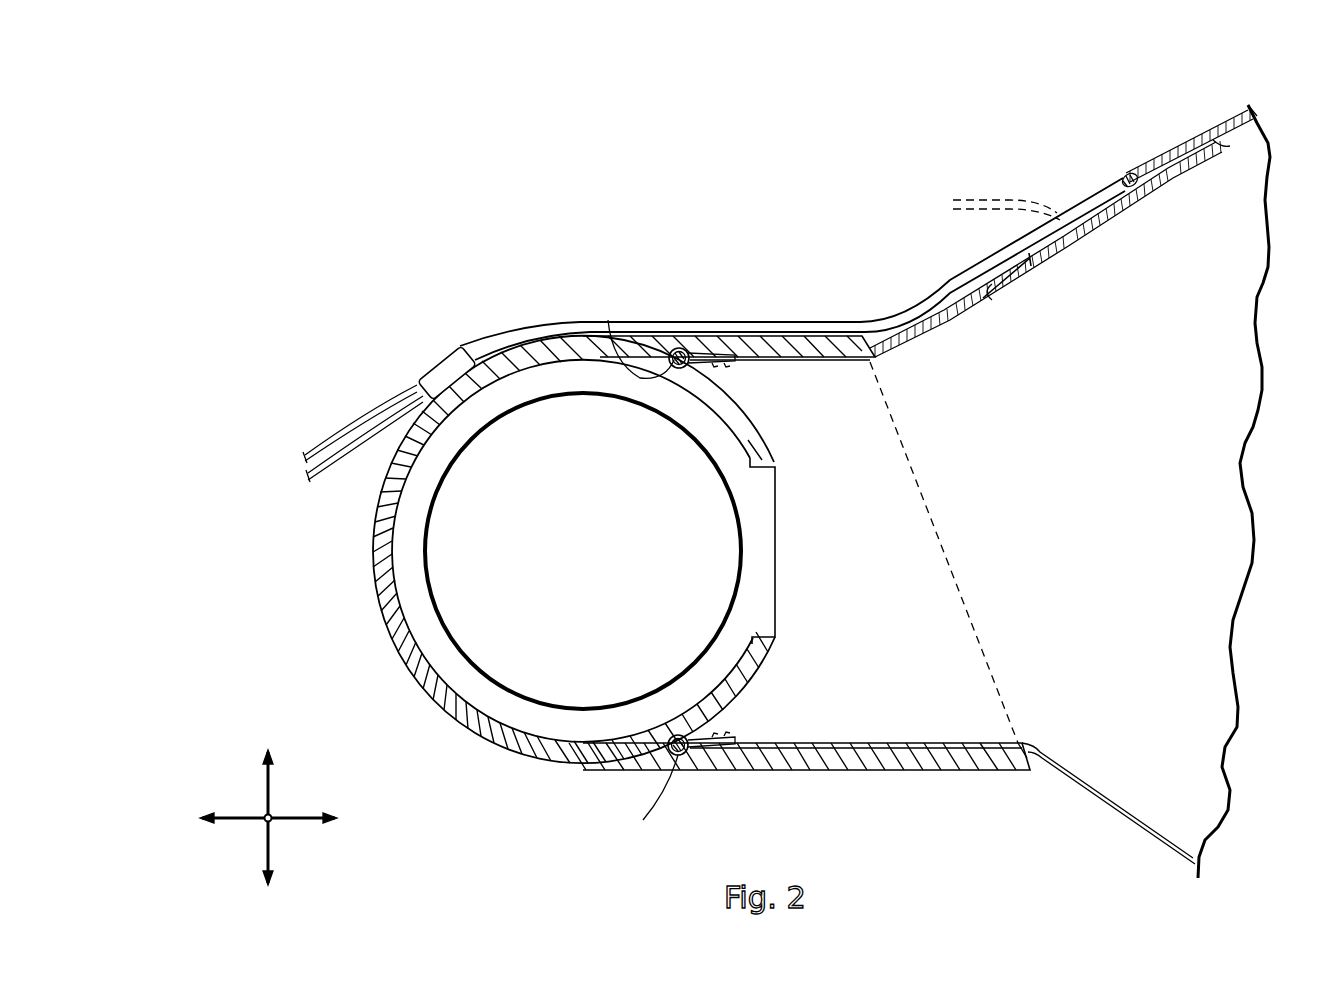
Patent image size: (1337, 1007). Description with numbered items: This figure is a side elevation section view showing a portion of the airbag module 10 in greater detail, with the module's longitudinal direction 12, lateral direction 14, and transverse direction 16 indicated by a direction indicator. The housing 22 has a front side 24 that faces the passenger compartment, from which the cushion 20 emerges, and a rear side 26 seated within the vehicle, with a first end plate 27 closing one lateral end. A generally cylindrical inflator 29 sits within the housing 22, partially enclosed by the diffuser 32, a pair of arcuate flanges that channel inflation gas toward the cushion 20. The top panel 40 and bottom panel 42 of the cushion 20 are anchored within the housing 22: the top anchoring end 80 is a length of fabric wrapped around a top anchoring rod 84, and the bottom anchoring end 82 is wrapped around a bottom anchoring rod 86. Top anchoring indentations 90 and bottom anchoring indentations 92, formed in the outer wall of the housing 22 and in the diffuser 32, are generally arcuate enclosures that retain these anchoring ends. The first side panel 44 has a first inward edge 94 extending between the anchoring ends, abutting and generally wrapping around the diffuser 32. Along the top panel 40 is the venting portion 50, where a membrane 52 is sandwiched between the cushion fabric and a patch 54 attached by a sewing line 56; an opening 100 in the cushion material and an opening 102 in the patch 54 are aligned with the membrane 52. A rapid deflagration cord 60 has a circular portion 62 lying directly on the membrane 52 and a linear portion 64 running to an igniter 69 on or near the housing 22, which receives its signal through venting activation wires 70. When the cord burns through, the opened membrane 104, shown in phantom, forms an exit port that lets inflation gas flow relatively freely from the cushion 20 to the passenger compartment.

The airbag module 10 is at (746, 169).
The longitudinal direction 12 is at (305, 822).
The lateral direction 14 is at (262, 822).
The transverse direction 16 is at (268, 780).
The cushion 20 is at (1077, 113).
The housing 22 is at (722, 795).
The front side 24 is at (903, 437).
The rear side 26 is at (372, 582).
The first end plate 27 is at (528, 383).
The inflator 29 is at (568, 559).
The diffuser 32 is at (745, 643).
The top panel 40 is at (1224, 115).
The bottom panel 42 is at (1103, 797).
The first side panel 44 is at (1090, 518).
The venting portion 50 is at (1058, 162).
The membrane 52 is at (1130, 172).
The patch 54 is at (1192, 178).
The sewing line 56 is at (1220, 155).
The rapid deflagration cord 60 is at (828, 302).
The circular portion 62 is at (1103, 190).
The linear portion 64 is at (743, 327).
The igniter 69 is at (440, 365).
The venting activation wires 70 is at (352, 437).
The top anchoring end 80 is at (712, 372).
The bottom anchoring end 82 is at (717, 730).
The top anchoring rod 84 is at (682, 340).
The bottom anchoring rod 86 is at (680, 733).
The top anchoring indentations 90 is at (662, 346).
The bottom anchoring indentations 92 is at (655, 733).
The first inward edge 94 is at (775, 550).
The opening 100 is at (1140, 167).
The opening 102 is at (1057, 250).
The opened membrane 104 is at (988, 203).